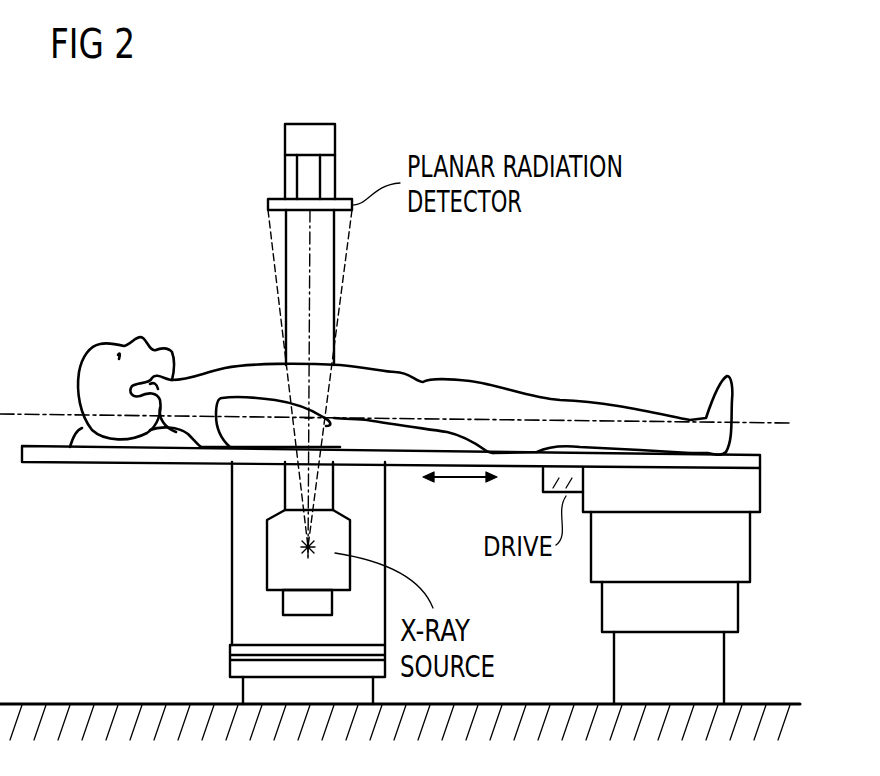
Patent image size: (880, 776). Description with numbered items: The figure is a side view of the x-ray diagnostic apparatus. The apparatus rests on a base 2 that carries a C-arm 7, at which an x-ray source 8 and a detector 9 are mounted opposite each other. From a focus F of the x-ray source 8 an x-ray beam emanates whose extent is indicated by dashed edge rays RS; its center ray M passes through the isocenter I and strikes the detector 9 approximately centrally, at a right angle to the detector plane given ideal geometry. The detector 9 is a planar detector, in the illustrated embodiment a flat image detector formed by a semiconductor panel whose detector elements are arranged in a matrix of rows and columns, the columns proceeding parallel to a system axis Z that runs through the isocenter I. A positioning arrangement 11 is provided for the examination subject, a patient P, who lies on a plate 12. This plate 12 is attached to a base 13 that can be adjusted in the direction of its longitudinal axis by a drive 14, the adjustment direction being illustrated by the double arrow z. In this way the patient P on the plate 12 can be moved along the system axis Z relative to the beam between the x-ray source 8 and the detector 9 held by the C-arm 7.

The base 2 is at (253, 620).
The C-arm 7 is at (336, 146).
The x-ray source 8 is at (282, 573).
The detector 9 is at (268, 204).
The positioning arrangement 11 is at (562, 586).
The plate 12 is at (103, 454).
The base 13 is at (633, 671).
The drive 14 is at (556, 490).
The focus F is at (304, 548).
The center ray M is at (310, 280).
The edge rays RS is at (346, 251).
The patient P is at (256, 372).
The isocenter I is at (328, 423).
The system axis Z is at (771, 421).
The double arrow z is at (459, 482).